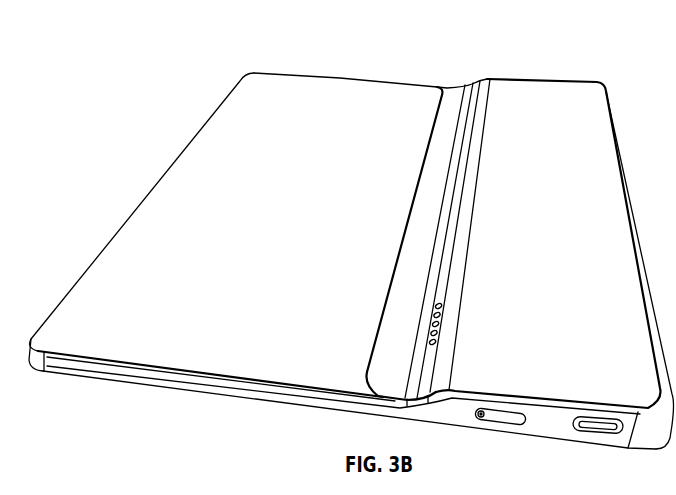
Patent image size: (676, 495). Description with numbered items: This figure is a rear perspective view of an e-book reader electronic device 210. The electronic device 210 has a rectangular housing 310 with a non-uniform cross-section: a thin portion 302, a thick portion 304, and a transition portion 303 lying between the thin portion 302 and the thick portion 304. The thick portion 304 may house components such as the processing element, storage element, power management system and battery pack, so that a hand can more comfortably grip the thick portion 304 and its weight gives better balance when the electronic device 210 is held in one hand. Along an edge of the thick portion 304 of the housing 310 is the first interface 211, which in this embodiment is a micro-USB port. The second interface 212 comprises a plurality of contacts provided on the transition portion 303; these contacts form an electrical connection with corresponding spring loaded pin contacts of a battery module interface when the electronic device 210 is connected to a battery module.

The electronic device 210 is at (158, 74).
The housing 310 is at (273, 72).
The thin portion 302 is at (371, 67).
The transition portion 303 is at (474, 76).
The thick portion 304 is at (567, 75).
The second interface 212 is at (428, 324).
The first interface 211 is at (592, 432).